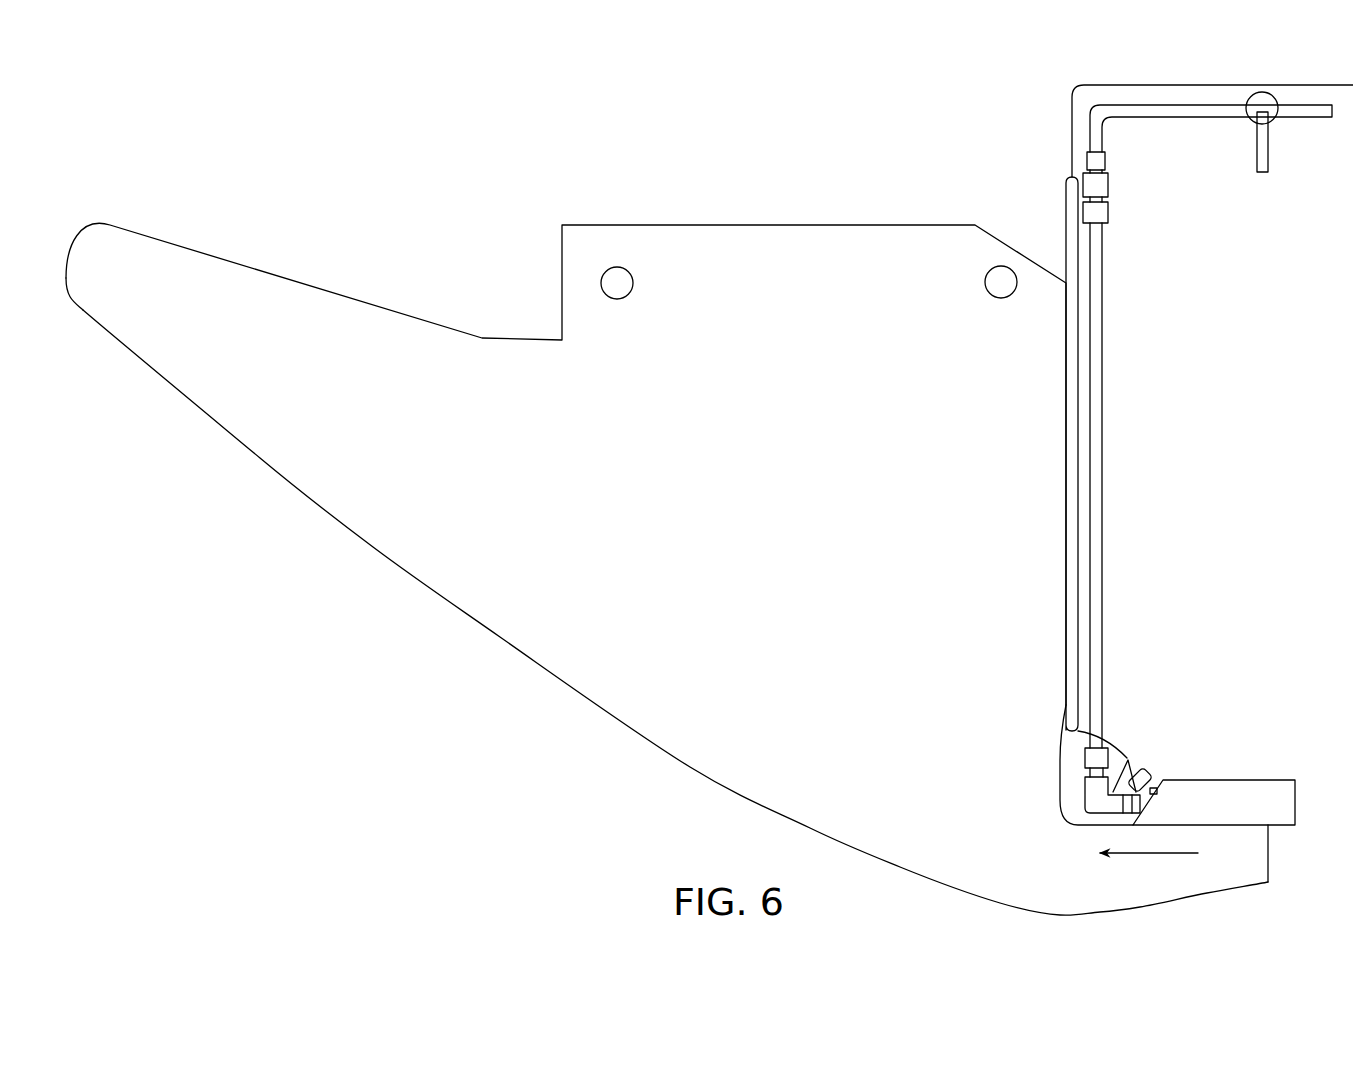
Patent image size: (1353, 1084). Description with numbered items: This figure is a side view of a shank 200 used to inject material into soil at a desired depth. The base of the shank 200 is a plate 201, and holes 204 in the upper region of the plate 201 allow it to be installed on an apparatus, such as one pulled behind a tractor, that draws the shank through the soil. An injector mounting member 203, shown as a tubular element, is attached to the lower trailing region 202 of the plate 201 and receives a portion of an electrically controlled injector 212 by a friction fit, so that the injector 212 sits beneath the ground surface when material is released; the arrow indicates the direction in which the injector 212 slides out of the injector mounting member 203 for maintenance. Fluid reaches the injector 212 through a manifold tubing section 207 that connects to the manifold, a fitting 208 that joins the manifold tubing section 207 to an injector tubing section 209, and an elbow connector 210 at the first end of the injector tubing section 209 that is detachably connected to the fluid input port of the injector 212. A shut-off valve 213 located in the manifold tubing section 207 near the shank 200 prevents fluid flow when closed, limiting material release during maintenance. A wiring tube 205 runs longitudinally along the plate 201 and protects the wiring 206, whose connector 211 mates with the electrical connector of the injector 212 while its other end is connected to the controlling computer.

The shank 200 is at (268, 637).
The shank plate 201 is at (686, 768).
The lower trailing region 202 is at (1270, 855).
The injector mounting member 203 is at (1261, 780).
The holes 204 is at (617, 299).
The wiring tube 205 is at (1063, 217).
The wiring 206 is at (1070, 125).
The manifold tubing section 207 is at (1183, 117).
The fitting 208 is at (1117, 196).
The injector tubing section 209 is at (1103, 466).
The elbow connector 210 is at (1128, 758).
The connector 211 is at (1140, 770).
The electrically controlled injector 212 is at (1155, 791).
The shut-off valve 213 is at (1277, 120).